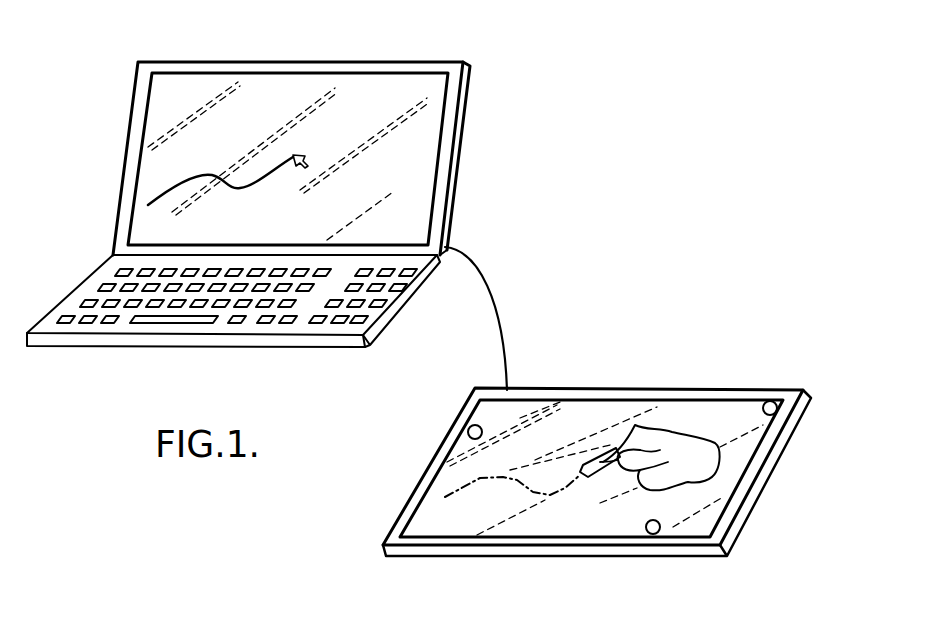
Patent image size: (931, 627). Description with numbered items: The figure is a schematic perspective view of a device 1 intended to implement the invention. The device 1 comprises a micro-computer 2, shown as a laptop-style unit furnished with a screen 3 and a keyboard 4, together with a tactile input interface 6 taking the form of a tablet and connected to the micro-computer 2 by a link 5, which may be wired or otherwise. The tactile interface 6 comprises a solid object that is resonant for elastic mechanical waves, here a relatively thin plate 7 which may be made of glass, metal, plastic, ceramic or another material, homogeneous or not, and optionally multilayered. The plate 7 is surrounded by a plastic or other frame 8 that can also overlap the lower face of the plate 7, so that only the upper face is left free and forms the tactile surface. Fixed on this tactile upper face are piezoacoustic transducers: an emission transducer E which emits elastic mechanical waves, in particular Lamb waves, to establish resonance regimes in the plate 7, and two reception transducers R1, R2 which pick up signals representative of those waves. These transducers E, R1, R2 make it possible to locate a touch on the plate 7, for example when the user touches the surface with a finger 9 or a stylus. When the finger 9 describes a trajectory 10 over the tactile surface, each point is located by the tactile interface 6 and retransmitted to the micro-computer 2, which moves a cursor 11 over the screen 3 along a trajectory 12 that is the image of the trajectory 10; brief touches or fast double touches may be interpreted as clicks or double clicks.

The device 1 is at (542, 177).
The micro-computer 2 is at (477, 98).
The screen 3 is at (170, 137).
The keyboard 4 is at (88, 282).
The link 5 is at (498, 302).
The tactile input interface 6 is at (402, 495).
The plate 7 is at (723, 485).
The frame 8 is at (733, 538).
The finger 9 is at (583, 470).
The trajectory 10 is at (477, 480).
The cursor 11 is at (293, 155).
The trajectory 12 is at (160, 193).
The emission transducer E is at (468, 431).
The reception transducer R1 is at (651, 534).
The reception transducer R2 is at (770, 401).